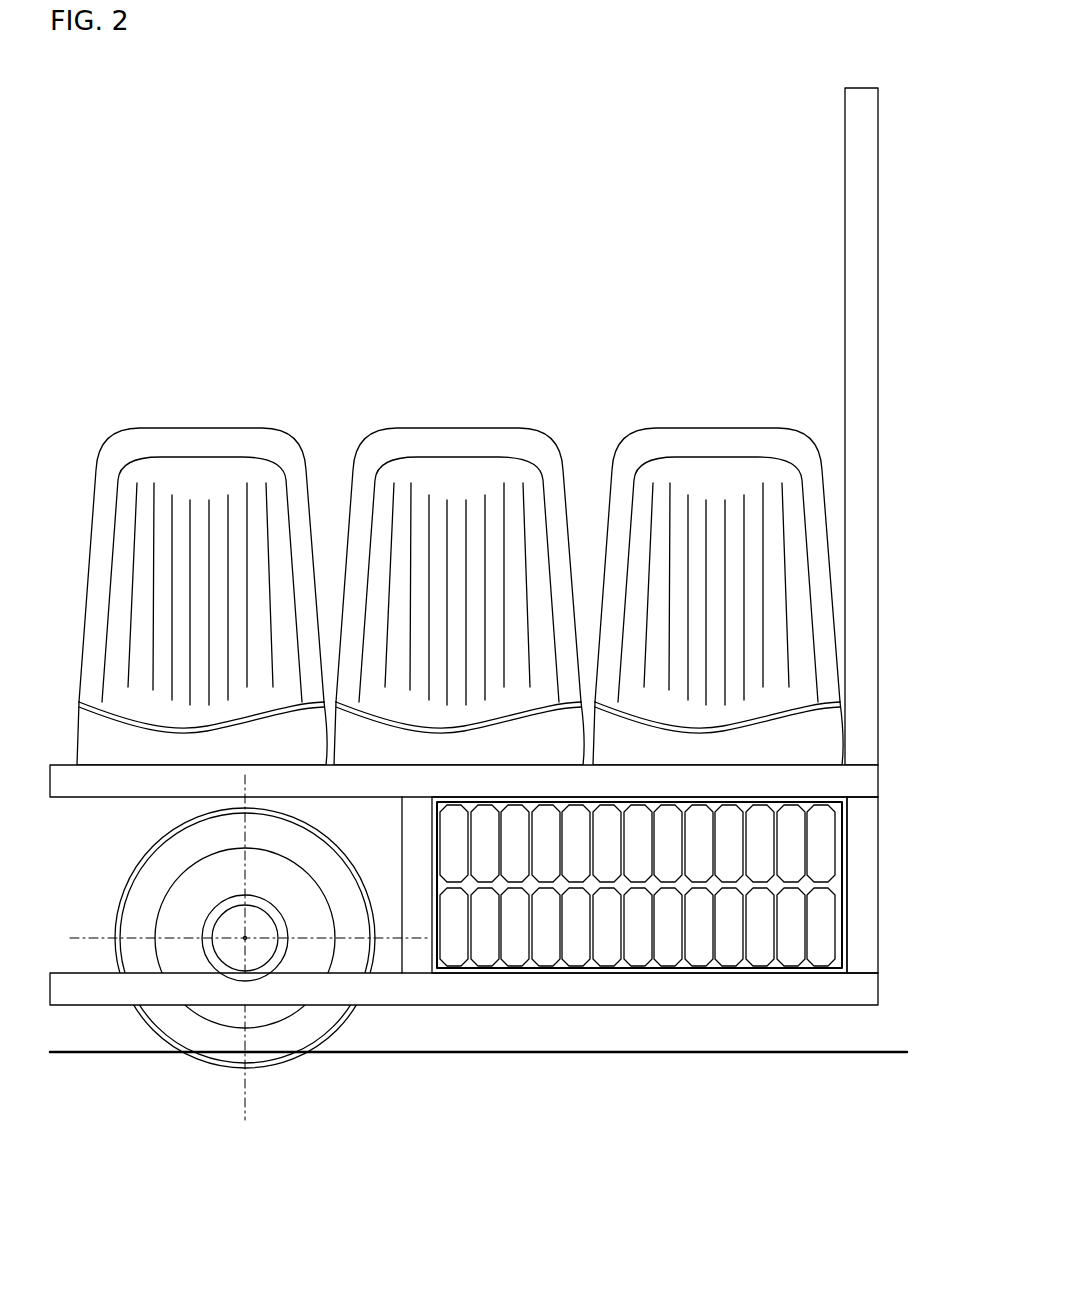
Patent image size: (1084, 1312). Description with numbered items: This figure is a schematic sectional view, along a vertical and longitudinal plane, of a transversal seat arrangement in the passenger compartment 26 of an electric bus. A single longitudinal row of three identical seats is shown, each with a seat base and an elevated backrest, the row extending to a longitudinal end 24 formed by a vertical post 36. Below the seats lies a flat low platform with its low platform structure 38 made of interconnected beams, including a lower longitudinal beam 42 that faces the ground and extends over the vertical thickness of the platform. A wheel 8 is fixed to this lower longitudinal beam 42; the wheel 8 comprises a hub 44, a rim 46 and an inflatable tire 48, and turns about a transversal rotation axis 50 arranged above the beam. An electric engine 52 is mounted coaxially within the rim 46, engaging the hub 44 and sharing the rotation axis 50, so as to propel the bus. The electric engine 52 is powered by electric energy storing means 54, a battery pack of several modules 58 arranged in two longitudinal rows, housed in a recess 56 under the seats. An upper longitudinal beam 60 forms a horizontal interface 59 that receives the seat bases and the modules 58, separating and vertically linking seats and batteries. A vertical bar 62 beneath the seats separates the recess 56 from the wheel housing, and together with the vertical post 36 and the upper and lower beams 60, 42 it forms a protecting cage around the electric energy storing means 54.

The wheel 8 is at (125, 1023).
The longitudinal end 24 is at (878, 250).
The passenger compartment 26 is at (390, 142).
The vertical post 36 is at (862, 163).
The low platform structure 38 is at (730, 1030).
The lower longitudinal beam 42 is at (655, 985).
The hub 44 is at (267, 913).
The rim 46 is at (175, 922).
The tire 48 is at (280, 1037).
The rotation axis 50 is at (245, 940).
The electric engine 52 is at (227, 898).
The electric energy storing means 54 is at (848, 900).
The recess 56 is at (455, 988).
The module 58 is at (640, 865).
The interface 59 is at (551, 793).
The upper longitudinal beam 60 is at (866, 787).
The vertical bar 62 is at (418, 975).